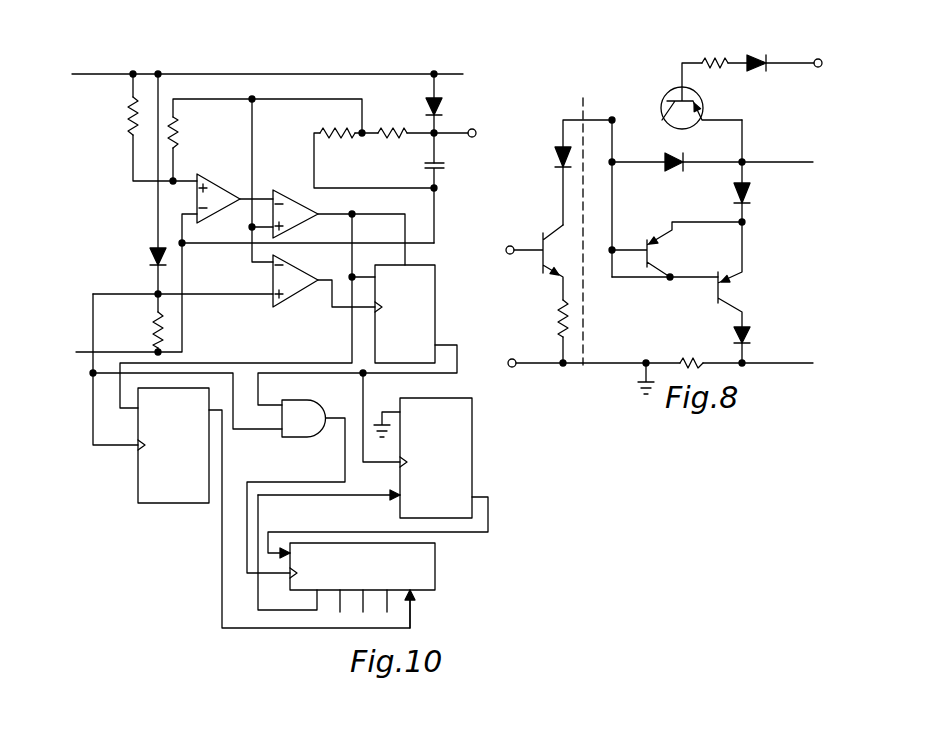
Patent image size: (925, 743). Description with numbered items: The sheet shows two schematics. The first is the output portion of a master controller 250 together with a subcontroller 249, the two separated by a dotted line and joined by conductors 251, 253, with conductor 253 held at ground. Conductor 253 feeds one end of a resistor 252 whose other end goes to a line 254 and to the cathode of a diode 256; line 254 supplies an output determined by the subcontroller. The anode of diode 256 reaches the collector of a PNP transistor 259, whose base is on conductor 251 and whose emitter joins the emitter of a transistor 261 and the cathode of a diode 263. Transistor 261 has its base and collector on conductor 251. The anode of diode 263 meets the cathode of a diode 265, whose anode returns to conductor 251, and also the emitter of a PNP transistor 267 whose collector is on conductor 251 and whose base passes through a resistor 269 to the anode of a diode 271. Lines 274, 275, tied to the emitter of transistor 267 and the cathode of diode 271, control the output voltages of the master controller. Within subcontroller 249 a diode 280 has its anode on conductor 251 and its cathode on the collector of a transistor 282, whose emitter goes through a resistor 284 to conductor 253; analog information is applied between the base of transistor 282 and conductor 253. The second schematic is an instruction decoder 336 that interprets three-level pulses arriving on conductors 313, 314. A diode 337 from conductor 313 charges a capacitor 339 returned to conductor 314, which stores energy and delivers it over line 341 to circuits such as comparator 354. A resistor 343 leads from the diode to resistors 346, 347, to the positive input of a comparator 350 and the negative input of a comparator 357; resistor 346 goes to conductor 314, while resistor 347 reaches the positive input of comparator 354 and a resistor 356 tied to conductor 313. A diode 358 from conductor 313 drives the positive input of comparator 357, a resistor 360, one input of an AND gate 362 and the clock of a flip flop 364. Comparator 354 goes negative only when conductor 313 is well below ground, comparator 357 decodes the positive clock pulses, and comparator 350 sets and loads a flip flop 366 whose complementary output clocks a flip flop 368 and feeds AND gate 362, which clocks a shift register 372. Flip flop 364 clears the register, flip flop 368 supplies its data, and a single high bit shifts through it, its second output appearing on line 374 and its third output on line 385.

In FIG. 10, the conductor 313 is at (136, 51).
In FIG. 10, the conductor 314 is at (76, 352).
In FIG. 10, the instruction decoder 336 is at (548, 460).
In FIG. 10, the diode 337 is at (440, 102).
In FIG. 10, the capacitor 339 is at (440, 175).
In FIG. 10, the line 341 is at (476, 137).
In FIG. 10, the resistor 343 is at (380, 135).
In FIG. 10, the resistor 346 is at (322, 132).
In FIG. 10, the resistor 347 is at (197, 124).
In FIG. 10, the comparator 350 is at (302, 182).
In FIG. 10, the comparator 354 is at (222, 188).
In FIG. 10, the resistor 356 is at (128, 115).
In FIG. 10, the comparator 357 is at (273, 285).
In FIG. 10, the diode 358 is at (148, 258).
In FIG. 10, the resistor 360 is at (155, 335).
In FIG. 10, the AND gate 362 is at (308, 437).
In FIG. 10, the flip flop 364 is at (138, 495).
In FIG. 10, the flip flop 366 is at (435, 302).
In FIG. 10, the flip flop 368 is at (473, 455).
In FIG. 10, the shift register 372 is at (435, 563).
In FIG. 10, the line 374 is at (340, 612).
In FIG. 10, the line 385 is at (387, 610).
In FIG. 8, the subcontroller 249 is at (500, 344).
In FIG. 8, the master controller 250 is at (650, 305).
In FIG. 8, the conductor 251 is at (592, 82).
In FIG. 8, the resistor 252 is at (697, 330).
In FIG. 8, the conductor 253 is at (636, 368).
In FIG. 8, the line 254 is at (788, 363).
In FIG. 8, the diode 256 is at (752, 338).
In FIG. 8, the PNP transistor 259 is at (726, 270).
In FIG. 8, the transistor 261 is at (645, 243).
In FIG. 8, the diode 263 is at (752, 193).
In FIG. 8, the diode 265 is at (672, 172).
In FIG. 8, the PNP transistor 267 is at (704, 108).
In FIG. 8, the resistor 269 is at (708, 60).
In FIG. 8, the diode 271 is at (758, 58).
In FIG. 8, the line 274 is at (772, 134).
In FIG. 8, the line 275 is at (822, 66).
In FIG. 8, the diode 280 is at (555, 157).
In FIG. 8, the transistor 282 is at (558, 230).
In FIG. 8, the resistor 284 is at (558, 318).